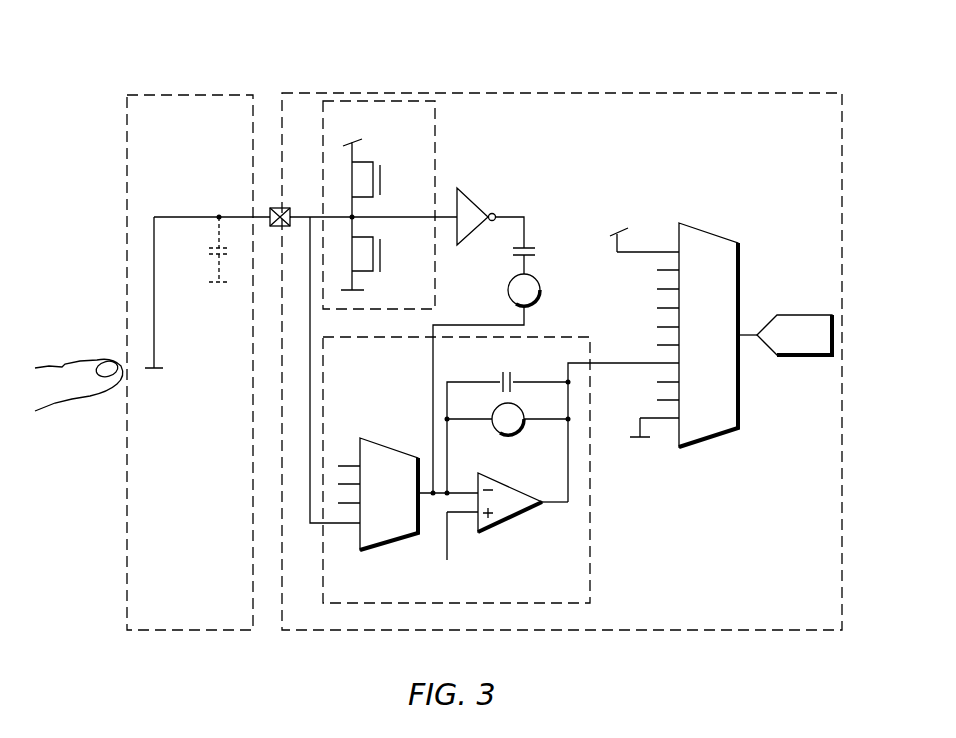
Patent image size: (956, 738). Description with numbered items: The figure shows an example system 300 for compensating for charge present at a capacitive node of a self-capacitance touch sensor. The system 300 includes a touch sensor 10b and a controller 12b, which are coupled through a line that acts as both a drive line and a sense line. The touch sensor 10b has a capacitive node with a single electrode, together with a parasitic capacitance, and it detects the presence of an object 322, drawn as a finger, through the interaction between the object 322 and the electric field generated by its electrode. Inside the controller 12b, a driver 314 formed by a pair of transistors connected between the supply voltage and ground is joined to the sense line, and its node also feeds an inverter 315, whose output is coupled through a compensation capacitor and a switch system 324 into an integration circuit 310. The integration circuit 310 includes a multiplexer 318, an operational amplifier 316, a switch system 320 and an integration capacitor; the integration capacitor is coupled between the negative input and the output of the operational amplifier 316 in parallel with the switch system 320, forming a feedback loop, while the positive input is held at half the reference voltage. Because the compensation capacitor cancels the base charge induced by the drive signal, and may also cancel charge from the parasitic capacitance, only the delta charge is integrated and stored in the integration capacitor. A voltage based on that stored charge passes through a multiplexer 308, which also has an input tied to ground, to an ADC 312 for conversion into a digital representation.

The system 300 is at (718, 54).
The touch sensor 10b is at (207, 95).
The controller 12b is at (512, 94).
The object 322 is at (105, 360).
The driver 314 is at (436, 162).
The inverter 315 is at (480, 204).
The switch system 324 is at (542, 293).
The integration circuit 310 is at (592, 546).
The multiplexer 318 is at (387, 449).
The switch system 320 is at (512, 436).
The operational amplifier 316 is at (534, 540).
The multiplexer 308 is at (706, 234).
The ADC 312 is at (800, 315).